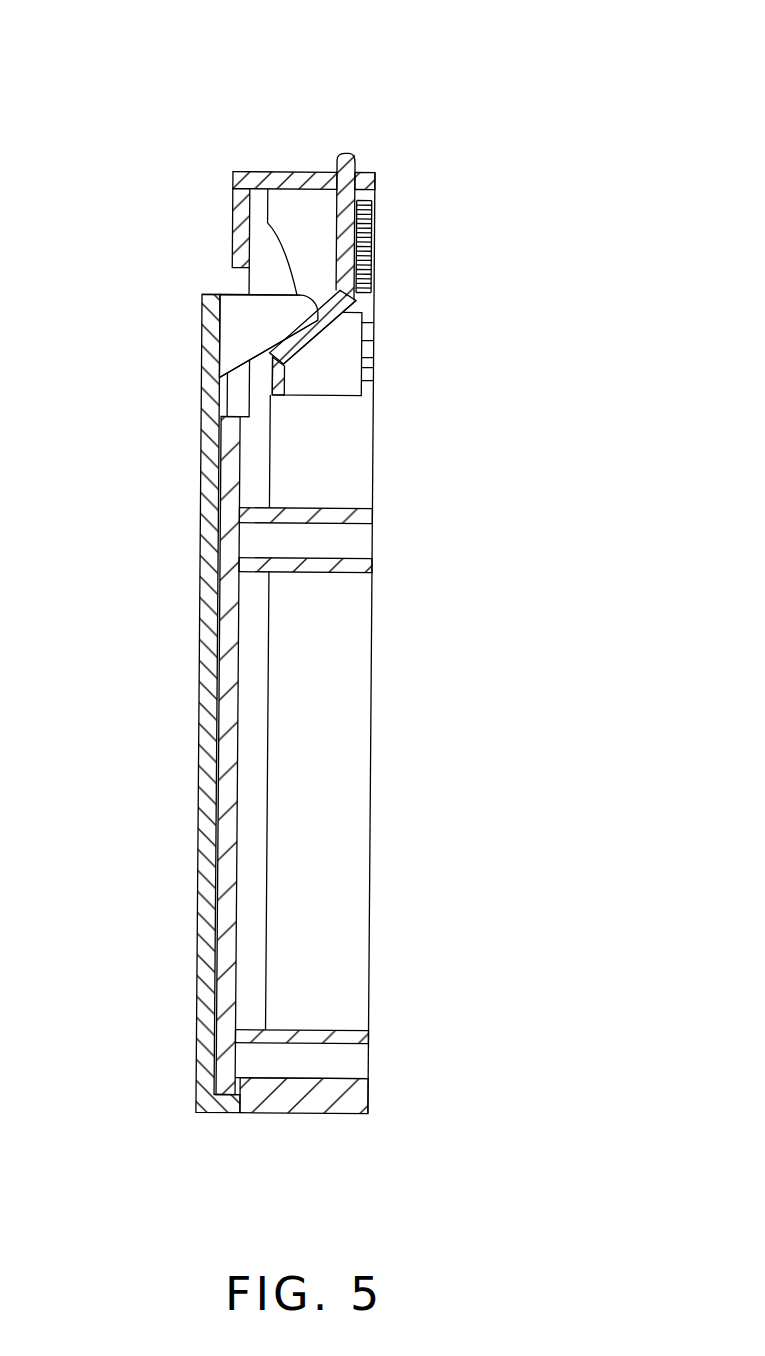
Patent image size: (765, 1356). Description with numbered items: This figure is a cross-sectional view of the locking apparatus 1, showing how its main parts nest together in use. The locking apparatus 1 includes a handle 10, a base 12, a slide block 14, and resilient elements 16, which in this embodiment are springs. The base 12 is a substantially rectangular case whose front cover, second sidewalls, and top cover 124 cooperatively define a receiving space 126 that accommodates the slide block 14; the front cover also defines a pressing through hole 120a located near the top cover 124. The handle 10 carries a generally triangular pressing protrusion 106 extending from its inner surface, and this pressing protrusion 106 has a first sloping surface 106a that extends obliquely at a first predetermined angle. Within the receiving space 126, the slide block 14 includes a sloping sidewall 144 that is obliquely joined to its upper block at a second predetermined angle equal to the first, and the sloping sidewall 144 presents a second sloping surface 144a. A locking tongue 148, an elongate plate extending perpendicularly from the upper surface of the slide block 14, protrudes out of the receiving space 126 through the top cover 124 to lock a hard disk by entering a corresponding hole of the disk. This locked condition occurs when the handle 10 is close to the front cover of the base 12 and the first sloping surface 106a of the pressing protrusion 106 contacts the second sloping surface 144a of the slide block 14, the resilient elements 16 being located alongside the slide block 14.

The locking apparatus 1 is at (250, 42).
The handle 10 is at (215, 620).
The base 12 is at (353, 1092).
The slide block 14 is at (332, 388).
The resilient elements 16 is at (374, 228).
The pressing protrusion 106 is at (248, 308).
The first sloping surface 106a is at (257, 352).
The pressing through hole 120a is at (243, 277).
The top cover 124 is at (280, 177).
The receiving space 126 is at (348, 712).
The sloping sidewall 144 is at (318, 332).
The second sloping surface 144a is at (300, 348).
The locking tongue 148 is at (343, 155).